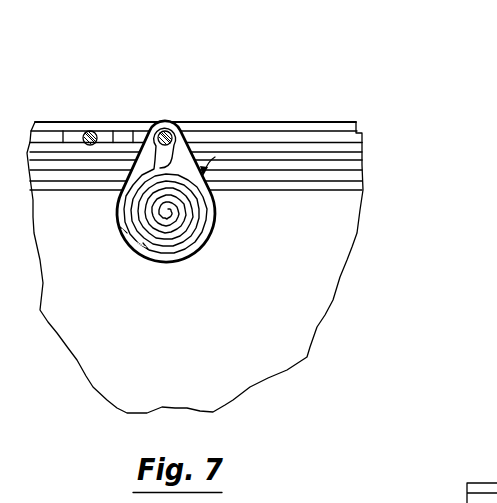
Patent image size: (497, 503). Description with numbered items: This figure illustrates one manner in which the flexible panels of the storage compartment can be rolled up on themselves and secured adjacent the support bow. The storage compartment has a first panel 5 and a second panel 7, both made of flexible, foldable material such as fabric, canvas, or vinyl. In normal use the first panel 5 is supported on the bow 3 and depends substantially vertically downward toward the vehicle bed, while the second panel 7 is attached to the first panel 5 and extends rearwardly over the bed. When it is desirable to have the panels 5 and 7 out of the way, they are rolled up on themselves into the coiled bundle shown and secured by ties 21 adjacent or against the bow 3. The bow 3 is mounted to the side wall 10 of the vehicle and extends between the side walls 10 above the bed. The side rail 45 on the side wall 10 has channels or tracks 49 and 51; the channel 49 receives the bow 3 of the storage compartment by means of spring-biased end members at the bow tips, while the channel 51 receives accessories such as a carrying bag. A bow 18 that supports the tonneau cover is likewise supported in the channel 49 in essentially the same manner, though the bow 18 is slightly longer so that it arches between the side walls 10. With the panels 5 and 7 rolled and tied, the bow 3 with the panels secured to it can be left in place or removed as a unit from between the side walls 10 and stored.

The bow 3 is at (168, 122).
The first panel 5 is at (123, 233).
The second panel 7 is at (140, 252).
The side wall 10 is at (190, 348).
The bow 18 is at (90, 130).
The tie 21 is at (215, 203).
The side rail 45 is at (236, 119).
The channel 49 is at (352, 137).
The channel 51 is at (353, 177).